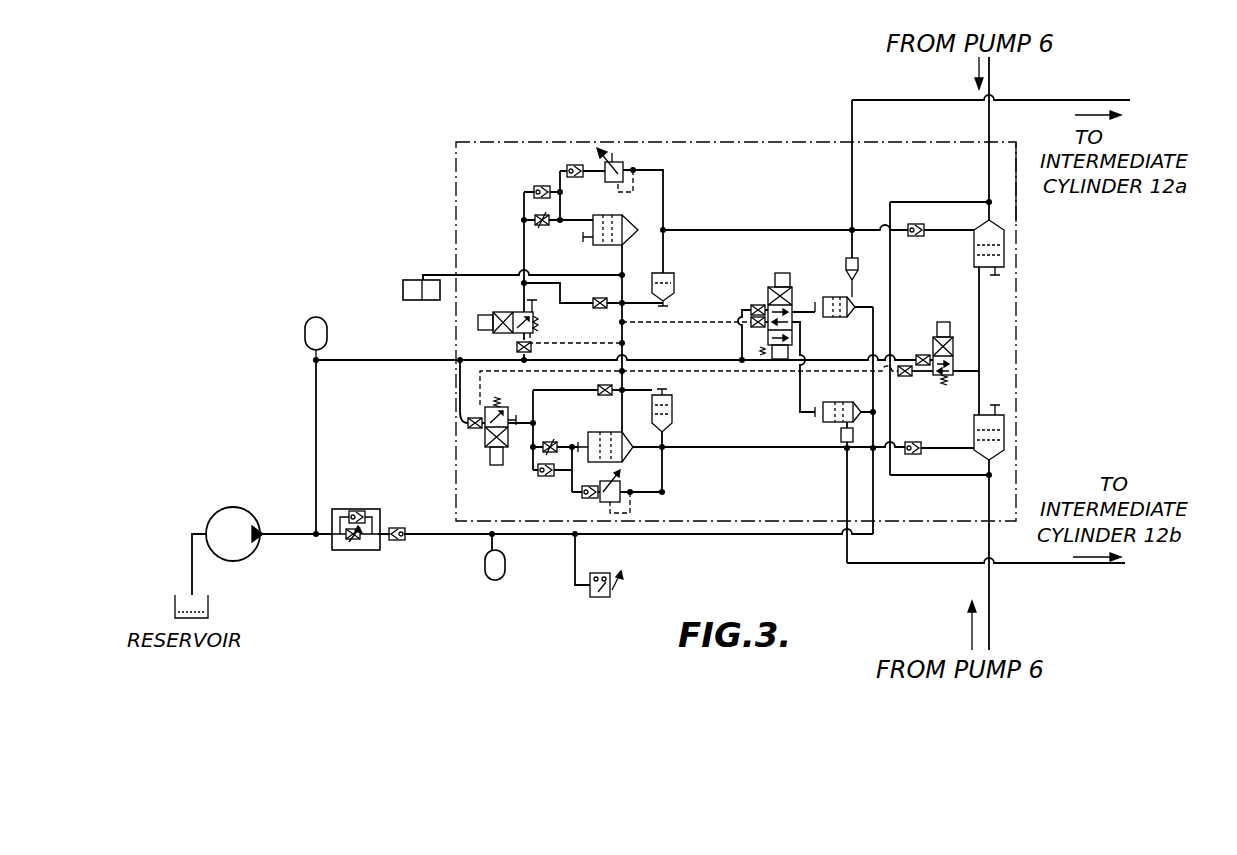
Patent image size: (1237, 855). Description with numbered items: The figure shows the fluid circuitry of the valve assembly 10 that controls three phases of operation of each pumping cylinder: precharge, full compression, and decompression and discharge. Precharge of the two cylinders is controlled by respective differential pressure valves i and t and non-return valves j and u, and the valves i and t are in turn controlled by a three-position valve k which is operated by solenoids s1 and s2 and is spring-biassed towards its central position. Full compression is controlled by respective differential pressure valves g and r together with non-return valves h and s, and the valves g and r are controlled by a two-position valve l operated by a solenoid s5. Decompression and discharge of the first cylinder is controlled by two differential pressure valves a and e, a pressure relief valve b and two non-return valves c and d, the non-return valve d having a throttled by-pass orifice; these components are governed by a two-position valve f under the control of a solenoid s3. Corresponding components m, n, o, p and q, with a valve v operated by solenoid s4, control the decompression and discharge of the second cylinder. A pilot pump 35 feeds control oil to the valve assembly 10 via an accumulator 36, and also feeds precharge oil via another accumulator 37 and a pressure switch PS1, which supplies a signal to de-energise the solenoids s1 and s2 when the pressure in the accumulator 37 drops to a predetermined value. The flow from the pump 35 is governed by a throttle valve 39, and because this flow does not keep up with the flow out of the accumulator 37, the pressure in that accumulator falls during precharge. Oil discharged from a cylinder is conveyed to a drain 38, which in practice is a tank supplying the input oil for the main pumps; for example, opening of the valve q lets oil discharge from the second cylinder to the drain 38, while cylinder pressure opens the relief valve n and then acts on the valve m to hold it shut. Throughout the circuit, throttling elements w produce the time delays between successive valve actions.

The valve assembly 10 is at (1022, 236).
The pilot pump 35 is at (255, 548).
The accumulator 36 is at (328, 332).
The accumulator 37 is at (488, 568).
The drain 38 is at (402, 290).
The throttle valve 39 is at (355, 545).
The pressure switch PS1 is at (588, 590).
The differential pressure valve a is at (588, 250).
The pressure relief valve b is at (626, 178).
The non-return valve c is at (577, 165).
The non-return valve d is at (542, 186).
The differential pressure valve e is at (680, 280).
The two-position valve f is at (513, 308).
The differential pressure valve g is at (980, 232).
The non-return valve h is at (918, 224).
The differential pressure valve i is at (852, 297).
The non-return valve j is at (860, 268).
The three-position valve k is at (768, 305).
The two-position valve l is at (957, 340).
The differential pressure valve m is at (613, 430).
The pressure relief valve n is at (625, 483).
The non-return valve o is at (592, 487).
The non-return valve p is at (550, 476).
The differential pressure valve q is at (677, 400).
The differential pressure valve r is at (972, 412).
The non-return valve s is at (915, 440).
The differential pressure valve t is at (838, 403).
The non-return valve u is at (841, 434).
The valve v is at (484, 440).
The throttling element w is at (530, 226).
The solenoid s1 is at (775, 276).
The solenoid s2 is at (772, 347).
The solenoid s3 is at (486, 312).
The solenoid s4 is at (494, 466).
The solenoid s5 is at (937, 330).